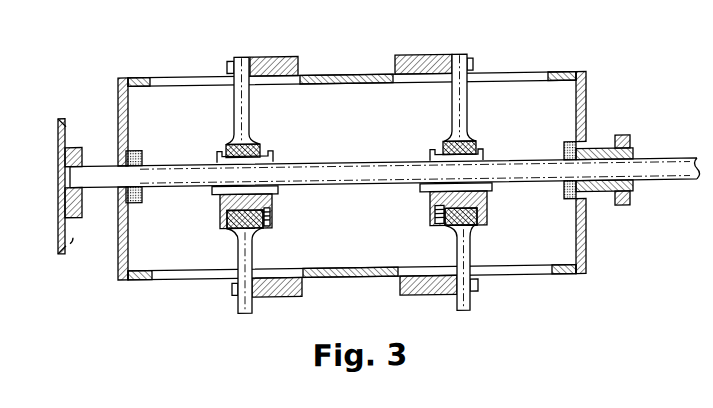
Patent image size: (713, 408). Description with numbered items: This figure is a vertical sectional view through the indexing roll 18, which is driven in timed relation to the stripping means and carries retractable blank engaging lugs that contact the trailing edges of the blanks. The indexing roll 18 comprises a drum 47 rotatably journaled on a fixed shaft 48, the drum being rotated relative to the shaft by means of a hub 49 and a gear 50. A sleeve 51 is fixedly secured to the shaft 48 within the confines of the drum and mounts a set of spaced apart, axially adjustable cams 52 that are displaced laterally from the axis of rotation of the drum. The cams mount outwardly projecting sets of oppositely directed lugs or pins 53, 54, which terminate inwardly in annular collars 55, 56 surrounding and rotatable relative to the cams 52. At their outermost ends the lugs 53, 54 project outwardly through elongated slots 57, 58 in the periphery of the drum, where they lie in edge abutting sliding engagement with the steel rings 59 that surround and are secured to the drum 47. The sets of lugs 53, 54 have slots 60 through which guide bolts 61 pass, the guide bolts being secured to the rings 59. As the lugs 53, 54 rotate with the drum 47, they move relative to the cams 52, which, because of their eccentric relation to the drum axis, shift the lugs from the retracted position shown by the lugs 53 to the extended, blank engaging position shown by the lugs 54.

The indexing roll 18 is at (346, 70).
The drum 47 is at (587, 92).
The fixed shaft 48 is at (668, 166).
The hub 49 is at (594, 154).
The gear 50 is at (630, 142).
The sleeve 51 is at (350, 166).
The cams 52 is at (220, 211).
The lugs 53 is at (247, 112).
The lugs 54 is at (251, 260).
The annular collar 55 is at (218, 153).
The annular collar 56 is at (258, 148).
The elongated slot 57 is at (199, 87).
The elongated slot 58 is at (185, 281).
The steel rings 59 is at (298, 60).
The slots 60 is at (476, 295).
The guide bolts 61 is at (227, 68).